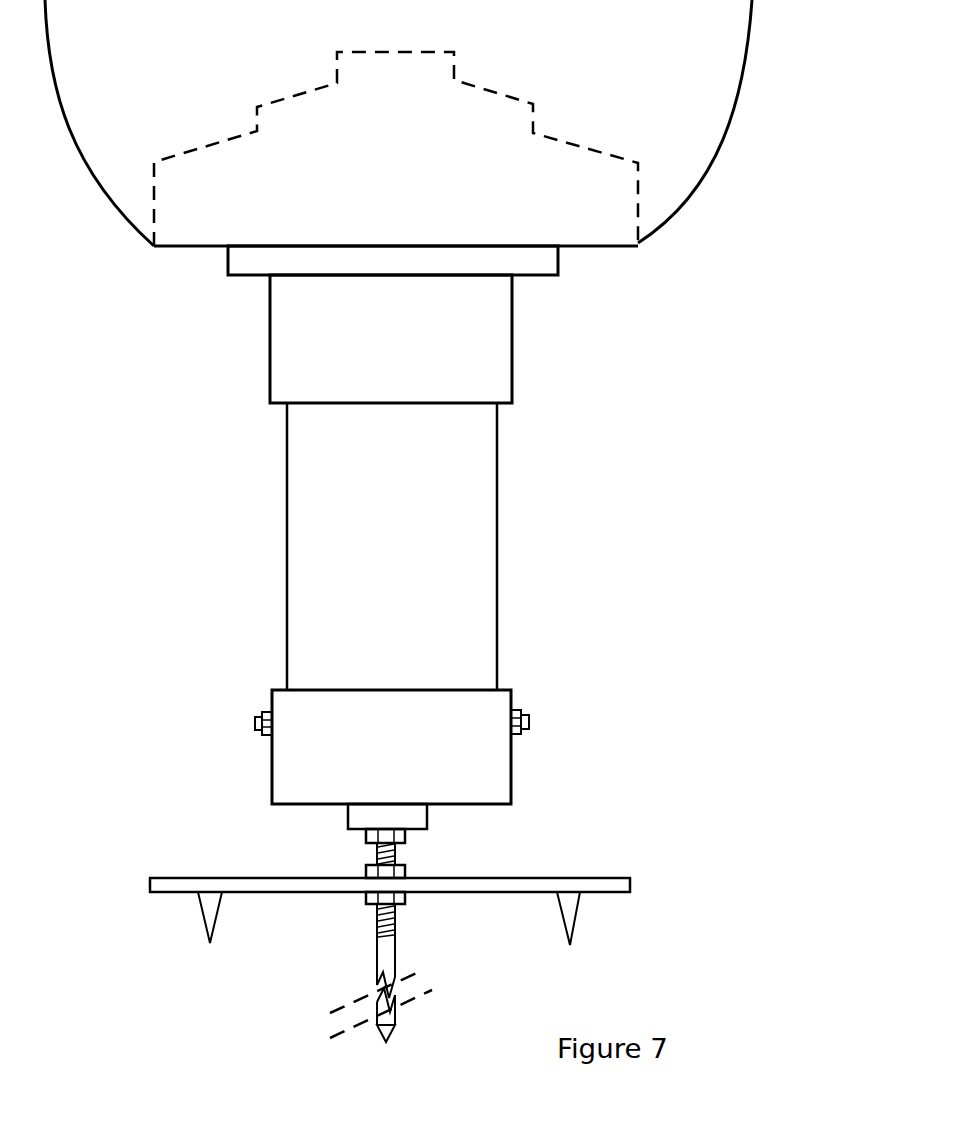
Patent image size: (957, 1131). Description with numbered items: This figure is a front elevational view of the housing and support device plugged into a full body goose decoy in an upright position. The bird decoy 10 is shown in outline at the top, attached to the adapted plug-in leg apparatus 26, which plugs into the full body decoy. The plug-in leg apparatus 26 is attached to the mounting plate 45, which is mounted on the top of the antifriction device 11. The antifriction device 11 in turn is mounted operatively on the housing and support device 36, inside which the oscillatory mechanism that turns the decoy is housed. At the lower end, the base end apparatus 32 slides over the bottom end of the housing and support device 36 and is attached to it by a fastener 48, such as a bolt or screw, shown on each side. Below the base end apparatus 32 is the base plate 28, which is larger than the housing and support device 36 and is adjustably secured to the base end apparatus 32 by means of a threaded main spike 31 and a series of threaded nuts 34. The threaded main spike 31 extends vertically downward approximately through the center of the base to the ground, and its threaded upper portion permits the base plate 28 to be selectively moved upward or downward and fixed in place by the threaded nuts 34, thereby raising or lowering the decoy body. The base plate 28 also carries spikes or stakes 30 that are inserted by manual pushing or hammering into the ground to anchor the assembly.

The bird decoy 10 is at (632, 77).
The plug-in leg apparatus 26 is at (525, 203).
The mounting plate 45 is at (530, 258).
The antifriction device 11 is at (462, 343).
The housing and support device 36 is at (435, 517).
The base end apparatus 32 is at (462, 748).
The fastener 48 is at (252, 722).
The threaded nuts 34 is at (363, 836).
The base plate 28 is at (617, 881).
The spikes or stakes 30 is at (207, 913).
The threaded main spike 31 is at (398, 950).